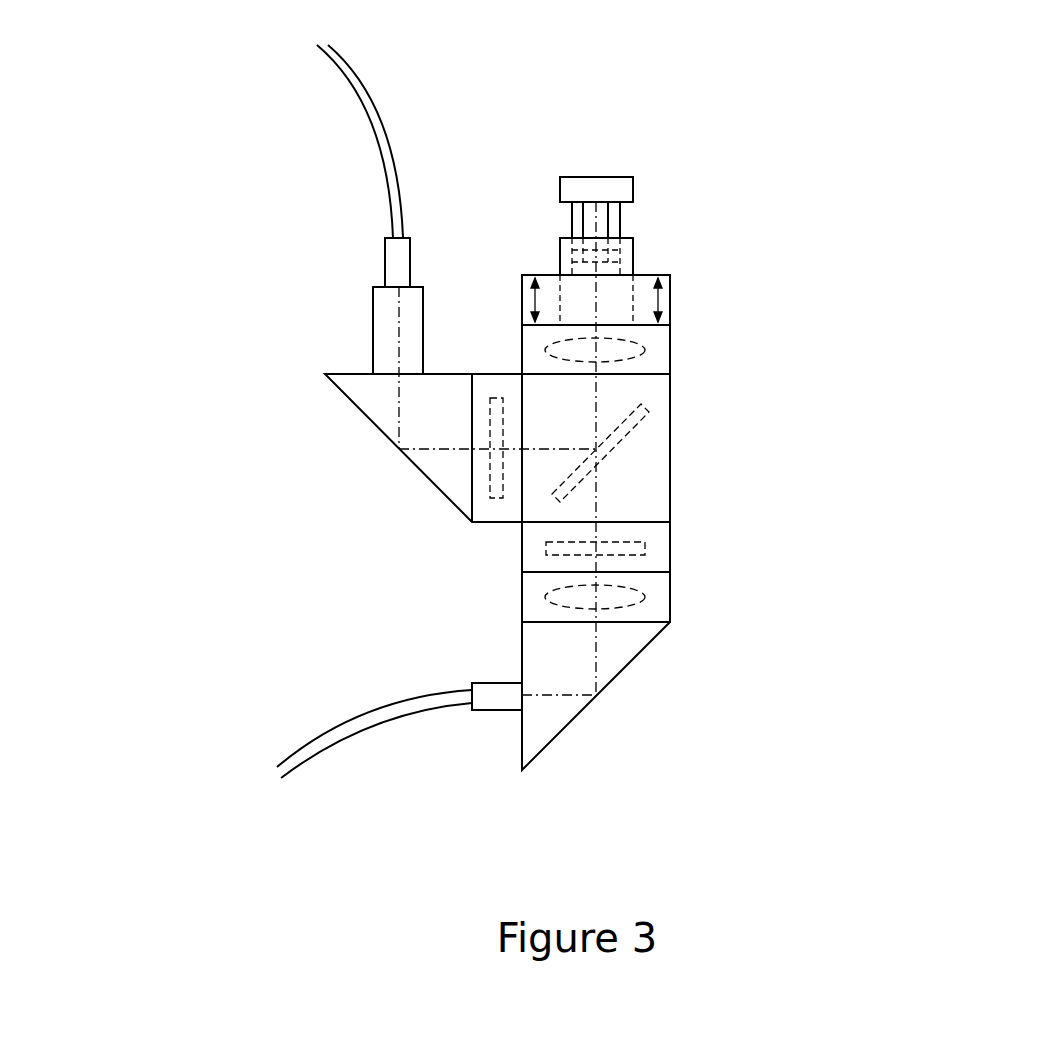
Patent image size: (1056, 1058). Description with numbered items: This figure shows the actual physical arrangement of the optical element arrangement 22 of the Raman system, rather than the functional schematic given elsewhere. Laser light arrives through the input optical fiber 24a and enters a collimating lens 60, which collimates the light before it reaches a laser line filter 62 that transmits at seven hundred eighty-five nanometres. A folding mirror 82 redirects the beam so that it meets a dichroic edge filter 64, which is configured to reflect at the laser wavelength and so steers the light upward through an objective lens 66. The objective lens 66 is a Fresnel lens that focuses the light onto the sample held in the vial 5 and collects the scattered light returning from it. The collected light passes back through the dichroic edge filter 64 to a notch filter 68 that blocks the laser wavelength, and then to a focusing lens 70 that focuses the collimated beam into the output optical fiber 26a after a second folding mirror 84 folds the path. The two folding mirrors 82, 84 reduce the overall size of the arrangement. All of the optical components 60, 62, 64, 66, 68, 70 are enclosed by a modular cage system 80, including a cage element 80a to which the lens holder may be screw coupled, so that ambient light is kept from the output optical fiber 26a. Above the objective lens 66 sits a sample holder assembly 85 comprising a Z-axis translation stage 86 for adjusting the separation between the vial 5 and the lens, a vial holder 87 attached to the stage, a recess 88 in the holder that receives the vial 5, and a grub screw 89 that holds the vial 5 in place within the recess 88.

The optical element arrangement 22 is at (910, 357).
The input optical fiber 24a is at (375, 128).
The output optical fiber 26a is at (318, 733).
The collimating lens 60 is at (380, 323).
The laser line filter 62 is at (502, 410).
The dichroic edge filter 64 is at (645, 418).
The objective lens 66 is at (622, 347).
The notch filter 68 is at (642, 545).
The focusing lens 70 is at (617, 597).
The modular cage system 80 is at (670, 483).
The cage element 80a is at (673, 367).
The folding mirror 82 is at (365, 418).
The folding mirror 84 is at (557, 737).
The sample holder assembly 85 is at (705, 255).
The Z-axis translation stage 86 is at (670, 297).
The vial holder 87 is at (560, 238).
The recess 88 is at (622, 257).
The grub screw 89 is at (560, 258).
The vial 5 is at (650, 214).